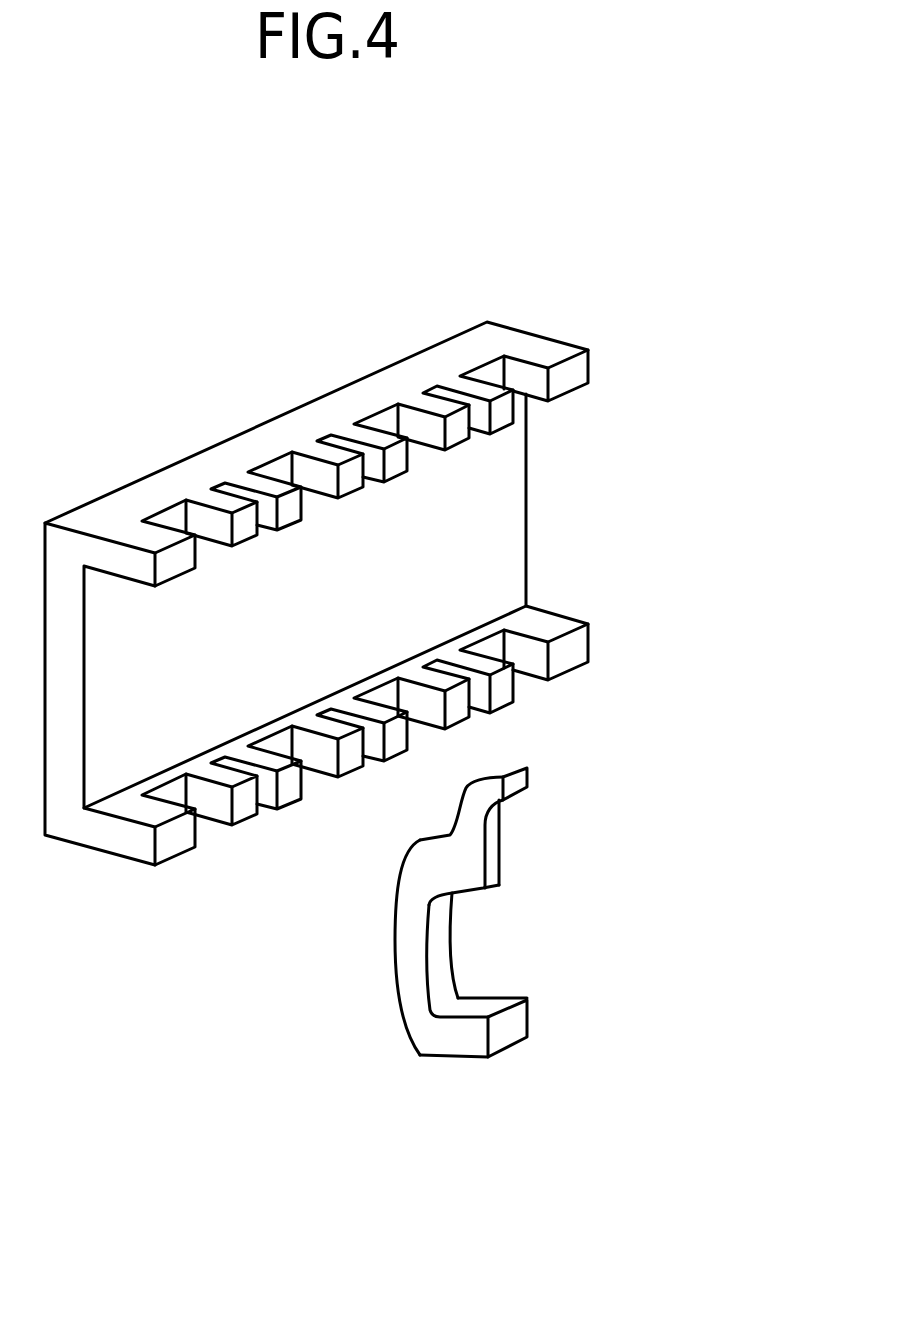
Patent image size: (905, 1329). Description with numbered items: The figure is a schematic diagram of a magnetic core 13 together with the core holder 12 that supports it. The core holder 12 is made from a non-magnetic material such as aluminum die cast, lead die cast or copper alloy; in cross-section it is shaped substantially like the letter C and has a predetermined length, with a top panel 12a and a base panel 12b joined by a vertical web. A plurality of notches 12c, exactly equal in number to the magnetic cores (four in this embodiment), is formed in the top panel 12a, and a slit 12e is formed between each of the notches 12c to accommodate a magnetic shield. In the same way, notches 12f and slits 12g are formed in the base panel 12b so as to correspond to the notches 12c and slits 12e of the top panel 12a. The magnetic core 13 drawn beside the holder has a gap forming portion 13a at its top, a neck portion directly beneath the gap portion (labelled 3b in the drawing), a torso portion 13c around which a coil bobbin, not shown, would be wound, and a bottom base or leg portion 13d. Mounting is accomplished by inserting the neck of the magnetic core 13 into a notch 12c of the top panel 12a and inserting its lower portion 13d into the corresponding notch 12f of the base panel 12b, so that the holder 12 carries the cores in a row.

The core holder 12 is at (389, 362).
The top panel 12a is at (97, 513).
The base panel 12b is at (115, 807).
The notch 12c is at (203, 556).
The slit 12e is at (265, 534).
The notch 12f is at (198, 828).
The slit 12g is at (267, 813).
The magnetic core 13 is at (498, 877).
The gap forming portion 13a is at (527, 765).
The upper arm of clip 3b is at (503, 828).
The torso portion 13c is at (452, 938).
The bottom base or leg portion 13d is at (480, 1008).